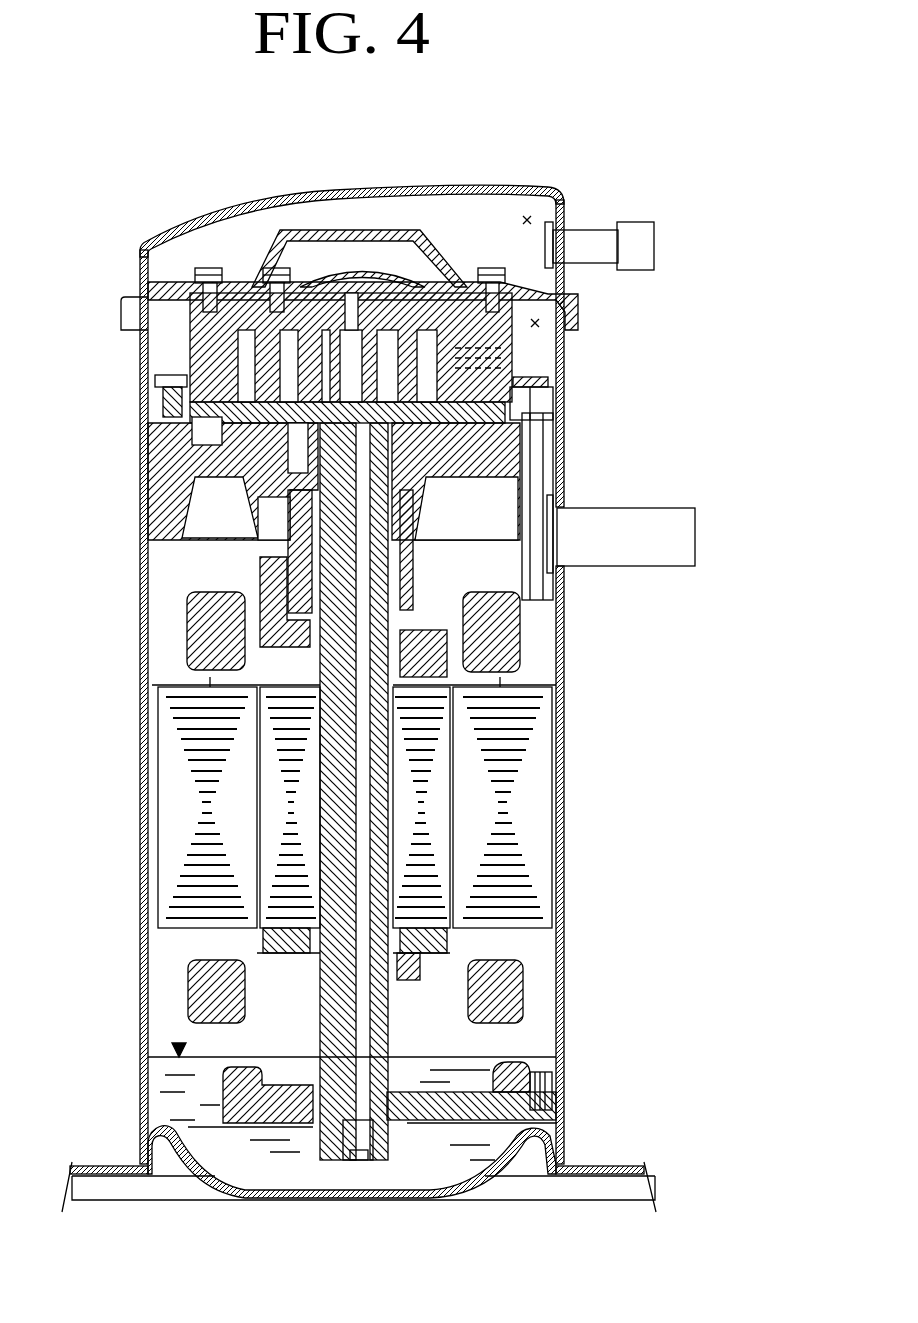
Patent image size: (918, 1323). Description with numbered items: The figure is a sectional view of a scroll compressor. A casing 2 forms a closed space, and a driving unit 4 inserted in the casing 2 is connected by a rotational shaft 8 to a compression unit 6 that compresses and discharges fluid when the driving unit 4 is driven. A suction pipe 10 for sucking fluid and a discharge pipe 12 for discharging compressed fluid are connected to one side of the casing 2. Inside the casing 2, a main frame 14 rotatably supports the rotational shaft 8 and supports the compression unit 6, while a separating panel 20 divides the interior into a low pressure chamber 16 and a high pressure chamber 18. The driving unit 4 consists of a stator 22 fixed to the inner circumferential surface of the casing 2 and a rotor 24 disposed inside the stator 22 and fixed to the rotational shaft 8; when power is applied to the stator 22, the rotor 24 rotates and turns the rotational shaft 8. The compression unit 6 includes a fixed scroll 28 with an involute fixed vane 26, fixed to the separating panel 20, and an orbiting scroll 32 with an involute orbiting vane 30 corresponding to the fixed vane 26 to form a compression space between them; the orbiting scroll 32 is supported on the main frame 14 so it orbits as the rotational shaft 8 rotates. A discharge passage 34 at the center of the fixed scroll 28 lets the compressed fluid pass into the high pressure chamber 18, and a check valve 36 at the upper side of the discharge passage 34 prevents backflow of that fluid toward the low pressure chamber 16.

The casing 2 is at (567, 713).
The driving unit 4 is at (182, 684).
The compression unit 6 is at (186, 332).
The rotational shaft 8 is at (337, 862).
The suction pipe 10 is at (688, 540).
The discharge pipe 12 is at (640, 233).
The main frame 14 is at (160, 490).
The low pressure chamber 16 is at (537, 322).
The high pressure chamber 18 is at (527, 220).
The separating panel 20 is at (423, 229).
The stator 22 is at (173, 768).
The rotor 24 is at (273, 823).
The fixed vane 26 is at (273, 353).
The fixed scroll 28 is at (180, 298).
The orbiting vane 30 is at (245, 387).
The orbiting scroll 32 is at (195, 442).
The discharge passage 34 is at (351, 300).
The check valve 36 is at (300, 274).